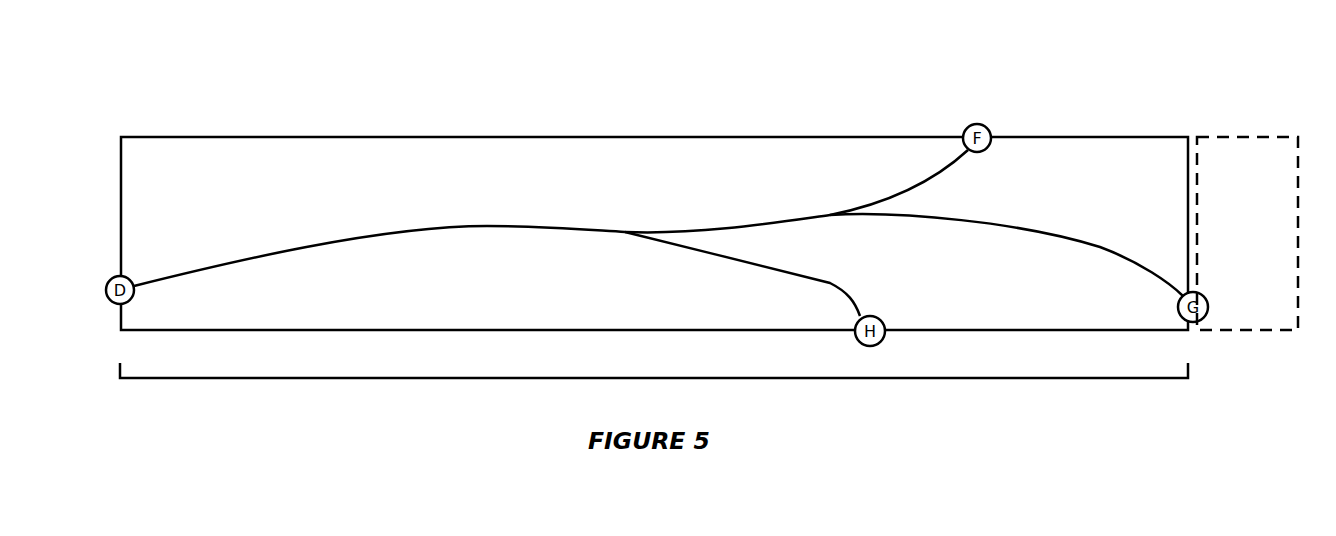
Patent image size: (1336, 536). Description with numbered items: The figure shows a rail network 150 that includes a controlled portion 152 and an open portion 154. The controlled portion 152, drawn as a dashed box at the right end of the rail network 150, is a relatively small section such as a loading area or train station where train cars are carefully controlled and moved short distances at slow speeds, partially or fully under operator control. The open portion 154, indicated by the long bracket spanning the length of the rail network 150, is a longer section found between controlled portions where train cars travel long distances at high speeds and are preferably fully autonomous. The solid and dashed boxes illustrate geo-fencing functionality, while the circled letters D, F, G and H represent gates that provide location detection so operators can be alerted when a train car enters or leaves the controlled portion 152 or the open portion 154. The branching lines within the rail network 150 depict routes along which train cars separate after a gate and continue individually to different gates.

The rail network 150 is at (538, 122).
The controlled portion 152 is at (1248, 136).
The open portion 154 is at (883, 378).